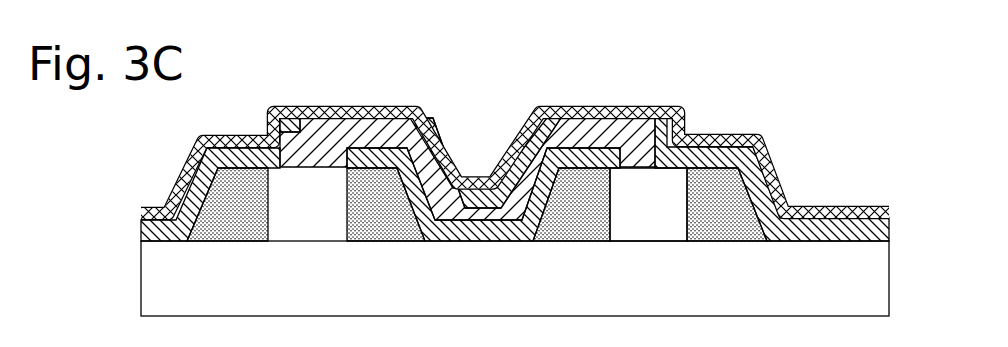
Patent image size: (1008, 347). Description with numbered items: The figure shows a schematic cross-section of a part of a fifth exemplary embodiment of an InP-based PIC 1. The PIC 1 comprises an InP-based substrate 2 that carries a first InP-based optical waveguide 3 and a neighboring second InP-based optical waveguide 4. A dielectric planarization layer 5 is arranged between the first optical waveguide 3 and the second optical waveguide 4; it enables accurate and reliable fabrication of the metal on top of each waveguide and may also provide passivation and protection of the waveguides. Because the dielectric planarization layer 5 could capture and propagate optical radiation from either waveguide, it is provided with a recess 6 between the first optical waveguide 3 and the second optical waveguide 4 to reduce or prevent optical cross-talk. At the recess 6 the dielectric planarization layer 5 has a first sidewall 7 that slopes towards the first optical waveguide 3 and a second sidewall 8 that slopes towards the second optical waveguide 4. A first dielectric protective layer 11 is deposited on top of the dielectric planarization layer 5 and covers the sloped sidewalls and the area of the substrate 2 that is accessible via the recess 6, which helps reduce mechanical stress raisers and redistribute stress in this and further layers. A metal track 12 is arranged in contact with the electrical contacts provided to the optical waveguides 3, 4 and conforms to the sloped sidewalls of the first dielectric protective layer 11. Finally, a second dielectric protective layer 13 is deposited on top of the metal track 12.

The InP-based PIC 1 is at (720, 84).
The InP-based substrate 2 is at (193, 273).
The first InP-based optical waveguide 3 is at (254, 147).
The second InP-based optical waveguide 4 is at (632, 205).
The dielectric planarization layer 5 is at (222, 197).
The recess 6 is at (468, 108).
The first sidewall 7 is at (400, 107).
The second sidewall 8 is at (547, 184).
The first dielectric protective layer 11 is at (141, 230).
The metal track 12 is at (314, 108).
The second dielectric protective layer 13 is at (838, 208).